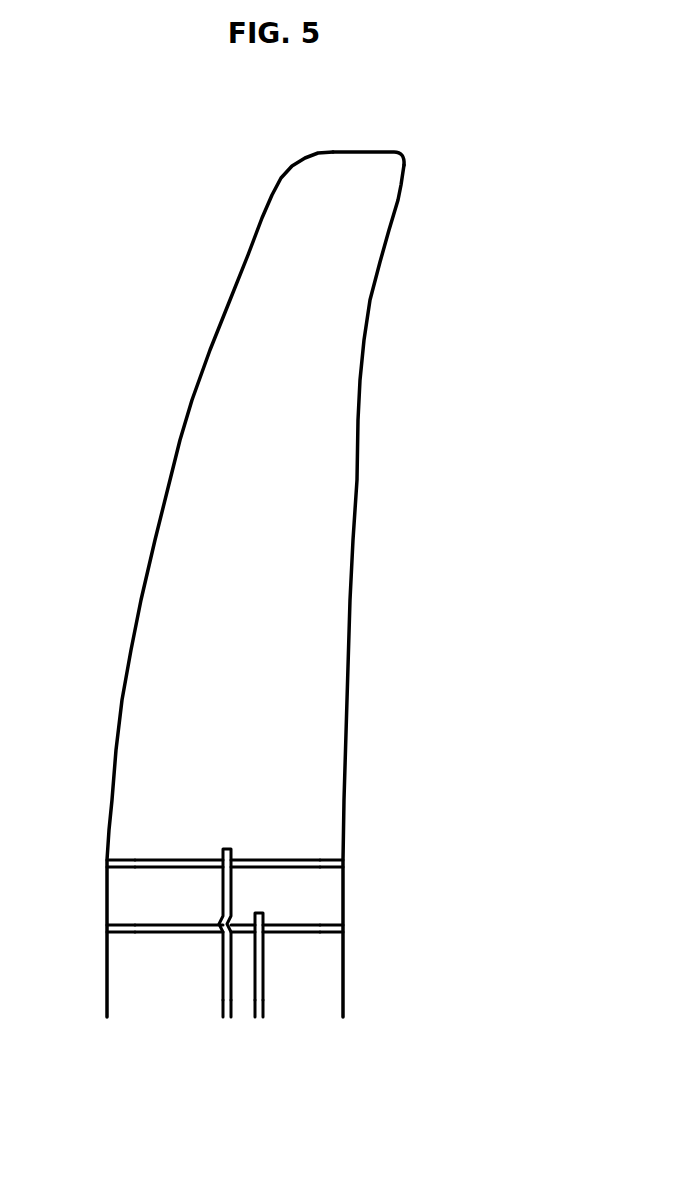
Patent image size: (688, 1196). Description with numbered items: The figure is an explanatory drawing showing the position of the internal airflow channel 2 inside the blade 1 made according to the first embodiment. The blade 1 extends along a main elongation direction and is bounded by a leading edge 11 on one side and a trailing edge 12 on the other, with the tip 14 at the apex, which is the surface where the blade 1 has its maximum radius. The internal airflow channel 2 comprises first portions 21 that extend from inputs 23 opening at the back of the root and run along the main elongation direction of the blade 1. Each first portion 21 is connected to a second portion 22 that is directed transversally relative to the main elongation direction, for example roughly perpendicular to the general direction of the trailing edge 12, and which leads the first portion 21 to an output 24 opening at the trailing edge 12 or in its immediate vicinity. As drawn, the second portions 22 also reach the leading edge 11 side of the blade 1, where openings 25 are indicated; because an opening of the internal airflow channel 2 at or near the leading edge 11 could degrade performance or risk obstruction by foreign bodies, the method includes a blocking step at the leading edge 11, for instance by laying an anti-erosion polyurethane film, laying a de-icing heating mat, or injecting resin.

The blade 1 is at (303, 559).
The leading edge 11 is at (150, 541).
The trailing edge 12 is at (355, 542).
The tip 14 is at (362, 152).
The internal airflow channel 2 is at (243, 971).
The first portion 21 is at (222, 987).
The second portion 22 is at (224, 872).
The input 23 is at (226, 1032).
The output 24 is at (355, 863).
The rib end at leading side 25 is at (97, 863).